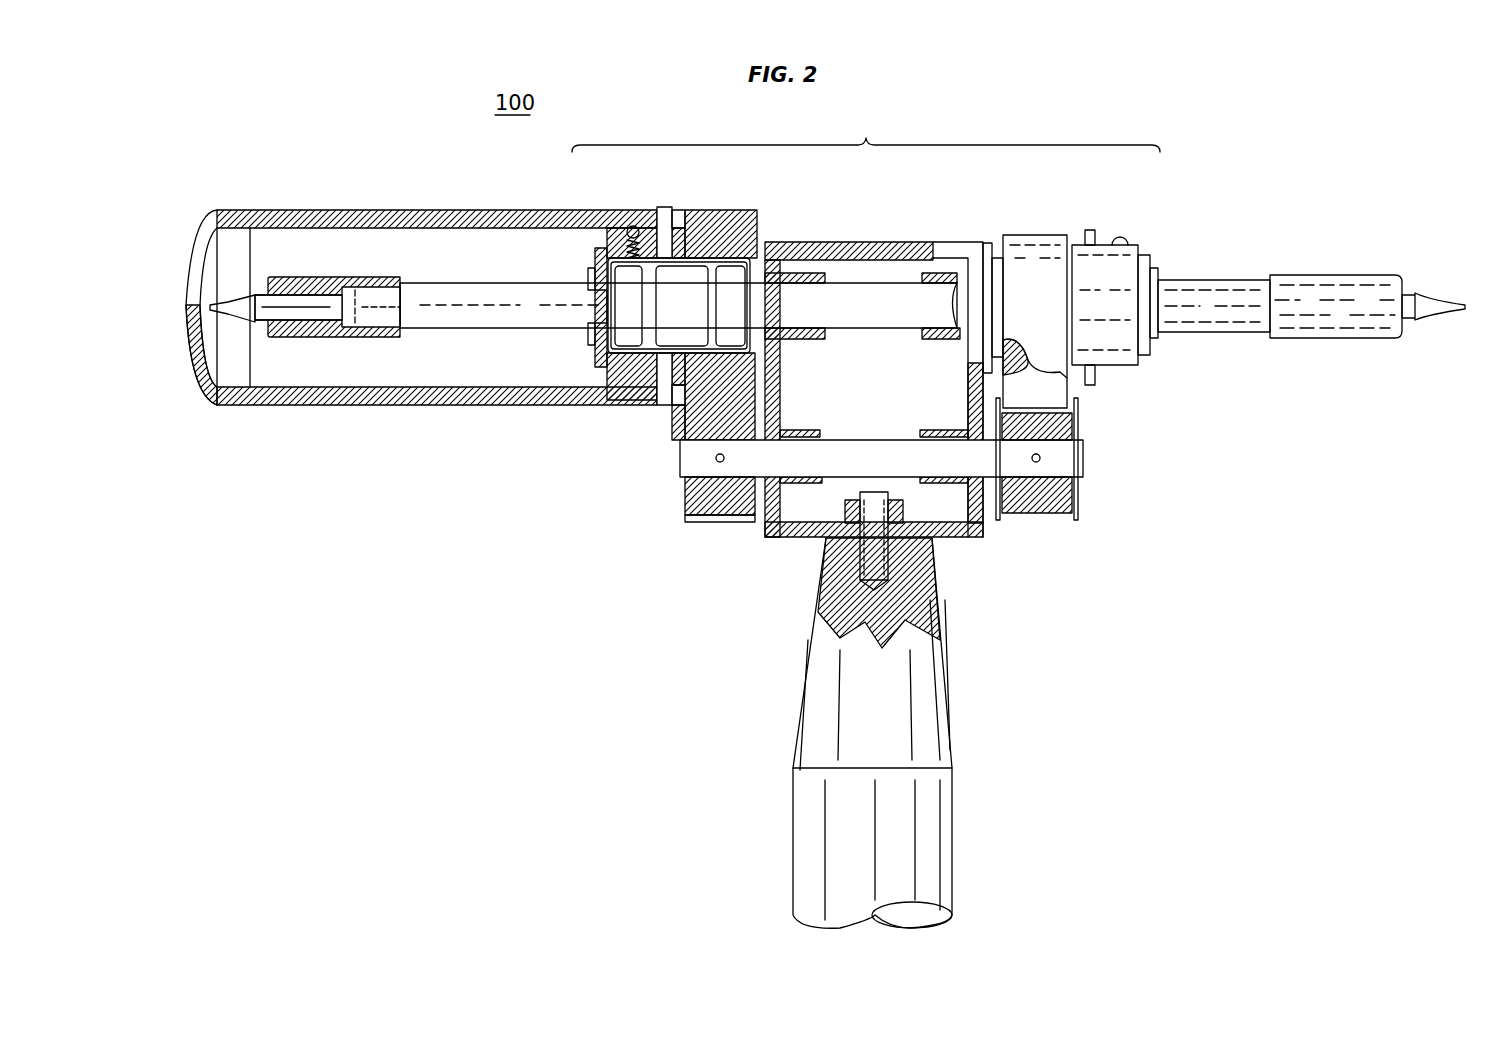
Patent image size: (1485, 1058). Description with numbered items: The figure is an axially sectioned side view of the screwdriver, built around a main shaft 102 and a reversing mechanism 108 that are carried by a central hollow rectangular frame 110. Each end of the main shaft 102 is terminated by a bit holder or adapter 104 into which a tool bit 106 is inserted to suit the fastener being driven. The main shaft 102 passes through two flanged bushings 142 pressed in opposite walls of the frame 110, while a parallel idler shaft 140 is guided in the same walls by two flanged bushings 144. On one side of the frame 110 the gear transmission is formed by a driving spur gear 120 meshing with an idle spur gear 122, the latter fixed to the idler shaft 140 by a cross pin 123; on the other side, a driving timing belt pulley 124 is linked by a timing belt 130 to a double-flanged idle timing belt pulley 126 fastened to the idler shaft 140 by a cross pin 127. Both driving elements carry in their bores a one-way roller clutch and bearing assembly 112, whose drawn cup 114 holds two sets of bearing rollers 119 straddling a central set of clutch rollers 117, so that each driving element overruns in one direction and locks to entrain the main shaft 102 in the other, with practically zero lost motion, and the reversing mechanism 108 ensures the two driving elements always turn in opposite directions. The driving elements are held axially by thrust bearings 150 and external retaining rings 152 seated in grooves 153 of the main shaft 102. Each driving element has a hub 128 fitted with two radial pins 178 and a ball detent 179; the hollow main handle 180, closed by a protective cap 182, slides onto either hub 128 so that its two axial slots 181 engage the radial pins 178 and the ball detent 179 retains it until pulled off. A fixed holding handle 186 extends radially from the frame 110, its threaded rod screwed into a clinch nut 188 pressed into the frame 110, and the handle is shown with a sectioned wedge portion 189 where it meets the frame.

The main shaft 102 is at (425, 283).
The bit holder or adapter 104 is at (320, 277).
The tool bit 106 is at (230, 300).
The reversing mechanism 108 is at (866, 131).
The hollow rectangular frame 110 is at (950, 258).
The one-way roller clutch and bearing assembly 112 is at (627, 402).
The drawn cup 114 is at (643, 403).
The clutch rollers 117 is at (678, 278).
The bearing rollers 119 is at (626, 280).
The spur gear 120 is at (762, 228).
The spur gear 122 is at (735, 518).
The cross pin 123 is at (710, 515).
The timing belt pulley 124 is at (1078, 245).
The double-flanged idle timing belt pulley 126 is at (1050, 515).
The cross pin 127 is at (1042, 458).
The hub 128 is at (632, 230).
The timing belt 130 is at (1025, 245).
The idler shaft 140 is at (875, 440).
The flanged bushings 142 is at (820, 284).
The flanged bushings 144 is at (808, 432).
The thrust bearings 150 is at (597, 258).
The external retaining rings 152 is at (588, 276).
The grooves 153 is at (597, 300).
The radial pins 178 is at (663, 212).
The ball detent 179 is at (628, 228).
The hollow main handle 180 is at (237, 217).
The axial slots 181 is at (678, 212).
The protective cap 182 is at (190, 352).
The fixed holding handle 186 is at (805, 730).
The clinch nut 188 is at (838, 512).
The handle wedge 189 is at (860, 568).